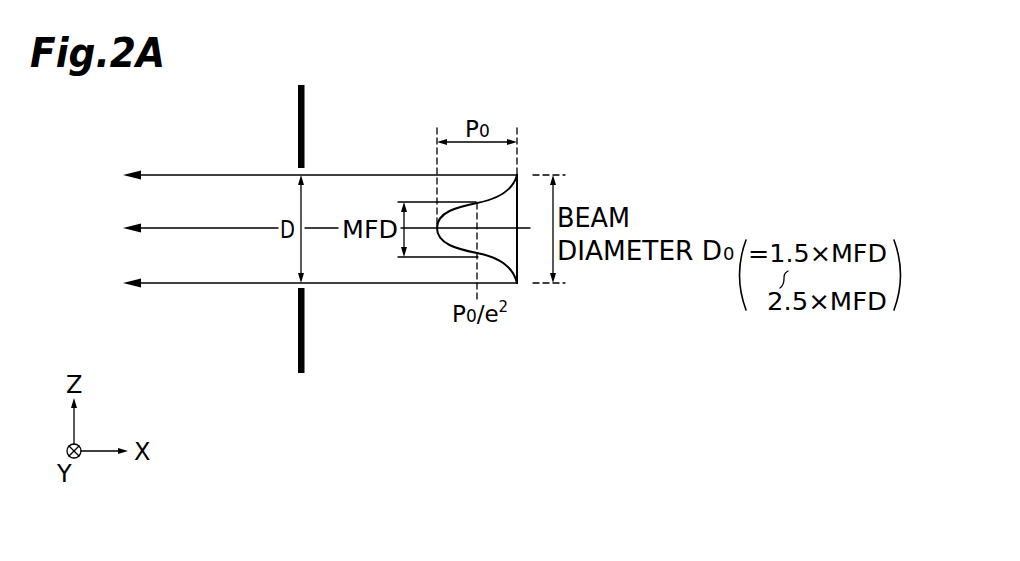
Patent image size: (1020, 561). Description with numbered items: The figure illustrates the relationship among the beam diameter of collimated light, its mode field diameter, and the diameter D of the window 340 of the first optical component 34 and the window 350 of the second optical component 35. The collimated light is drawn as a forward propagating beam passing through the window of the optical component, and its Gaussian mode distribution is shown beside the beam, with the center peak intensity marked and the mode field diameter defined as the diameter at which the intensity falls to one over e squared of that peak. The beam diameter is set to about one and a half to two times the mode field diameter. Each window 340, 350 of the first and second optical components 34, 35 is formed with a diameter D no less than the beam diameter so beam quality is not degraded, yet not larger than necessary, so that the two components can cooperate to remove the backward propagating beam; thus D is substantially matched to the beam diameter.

The window 340 is at (271, 262).
The window 350 is at (319, 256).
The first optical component 34 is at (304, 337).
The second optical component 35 is at (344, 239).